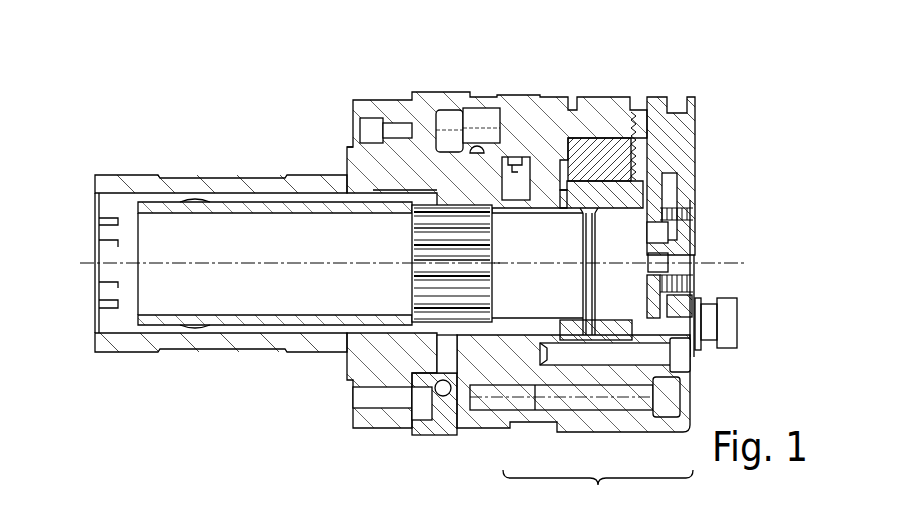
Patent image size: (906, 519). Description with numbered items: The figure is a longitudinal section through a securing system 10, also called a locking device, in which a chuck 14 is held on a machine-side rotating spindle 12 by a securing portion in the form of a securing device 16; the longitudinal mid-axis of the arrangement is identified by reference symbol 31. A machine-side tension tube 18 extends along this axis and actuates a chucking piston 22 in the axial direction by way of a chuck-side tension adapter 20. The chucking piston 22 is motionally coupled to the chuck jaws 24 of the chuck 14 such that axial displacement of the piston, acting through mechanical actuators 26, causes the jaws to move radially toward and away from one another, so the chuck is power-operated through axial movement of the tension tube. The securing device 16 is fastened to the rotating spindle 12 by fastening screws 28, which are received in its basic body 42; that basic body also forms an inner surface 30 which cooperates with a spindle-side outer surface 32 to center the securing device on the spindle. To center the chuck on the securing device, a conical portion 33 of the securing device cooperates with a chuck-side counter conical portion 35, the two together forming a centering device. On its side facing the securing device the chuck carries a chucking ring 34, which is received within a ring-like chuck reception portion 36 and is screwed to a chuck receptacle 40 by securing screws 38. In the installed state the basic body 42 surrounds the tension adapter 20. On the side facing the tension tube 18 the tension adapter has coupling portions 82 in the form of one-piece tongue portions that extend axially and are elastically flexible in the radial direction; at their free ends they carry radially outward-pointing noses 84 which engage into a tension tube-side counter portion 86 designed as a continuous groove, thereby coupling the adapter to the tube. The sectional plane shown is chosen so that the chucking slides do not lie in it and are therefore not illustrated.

The securing system 10 is at (207, 70).
The rotating spindle 12 is at (226, 345).
The chuck 14 is at (598, 489).
The securing device 16 is at (458, 420).
The tension tube 18 is at (280, 318).
The tension adapter 20 is at (498, 318).
The chucking piston 22 is at (605, 330).
The chuck jaws 24 is at (678, 140).
The mechanical actuators 26 is at (603, 147).
The fastening screws 28 is at (397, 120).
The inner surface 30 is at (432, 118).
The longitudinal mid-axis 31 is at (708, 262).
The outer surface 32 is at (430, 166).
The conical portion 33 is at (504, 185).
The chucking ring 34 is at (487, 112).
The counter conical portion 35 is at (503, 177).
The chuck reception portion 36 is at (484, 112).
The securing screws 38 is at (490, 128).
The chuck receptacle 40 is at (555, 110).
The basic body 42 is at (515, 338).
The coupling portions 82 is at (450, 257).
The noses 84 is at (425, 225).
The counter portion 86 is at (418, 211).